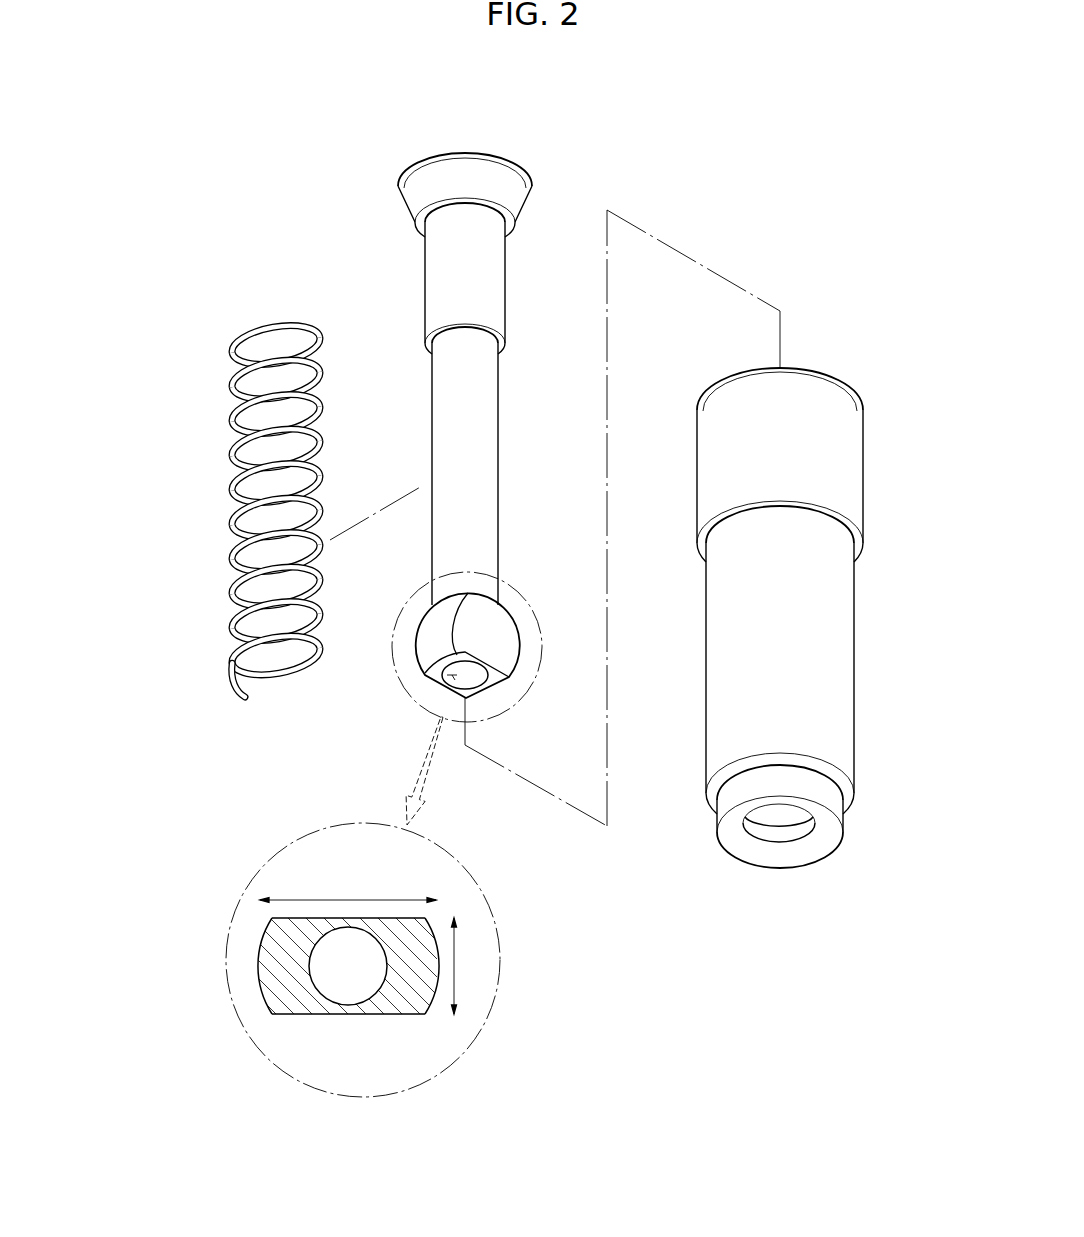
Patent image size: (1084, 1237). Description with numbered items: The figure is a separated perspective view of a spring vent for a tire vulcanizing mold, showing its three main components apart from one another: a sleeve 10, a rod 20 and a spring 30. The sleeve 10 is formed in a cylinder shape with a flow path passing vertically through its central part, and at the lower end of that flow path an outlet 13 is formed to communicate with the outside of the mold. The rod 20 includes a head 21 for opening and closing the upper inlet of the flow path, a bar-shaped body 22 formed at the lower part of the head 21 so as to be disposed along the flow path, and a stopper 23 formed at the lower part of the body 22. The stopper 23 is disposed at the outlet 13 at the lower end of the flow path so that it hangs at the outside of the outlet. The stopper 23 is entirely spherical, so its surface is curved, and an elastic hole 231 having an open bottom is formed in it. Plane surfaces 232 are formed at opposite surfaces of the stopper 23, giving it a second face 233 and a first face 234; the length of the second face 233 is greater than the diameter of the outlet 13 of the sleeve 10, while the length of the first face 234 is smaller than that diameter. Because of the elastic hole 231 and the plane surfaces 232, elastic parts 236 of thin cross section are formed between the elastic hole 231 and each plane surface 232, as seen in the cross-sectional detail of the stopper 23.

The sleeve 10 is at (741, 635).
The outlet 13 is at (784, 817).
The rod 20 is at (504, 150).
The head 21 is at (450, 167).
The body 22 is at (493, 427).
The stopper 23 is at (417, 631).
The elastic hole 231 is at (453, 673).
The plane surfaces 232 is at (488, 633).
The second face 233 is at (348, 890).
The first face 234 is at (473, 966).
The elastic parts 236 is at (356, 918).
The spring 30 is at (288, 302).